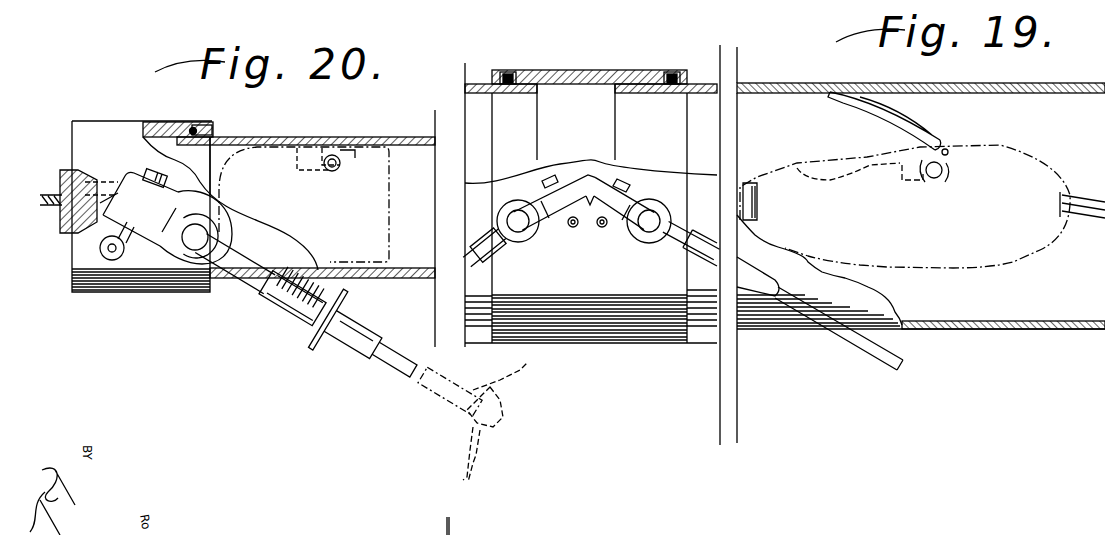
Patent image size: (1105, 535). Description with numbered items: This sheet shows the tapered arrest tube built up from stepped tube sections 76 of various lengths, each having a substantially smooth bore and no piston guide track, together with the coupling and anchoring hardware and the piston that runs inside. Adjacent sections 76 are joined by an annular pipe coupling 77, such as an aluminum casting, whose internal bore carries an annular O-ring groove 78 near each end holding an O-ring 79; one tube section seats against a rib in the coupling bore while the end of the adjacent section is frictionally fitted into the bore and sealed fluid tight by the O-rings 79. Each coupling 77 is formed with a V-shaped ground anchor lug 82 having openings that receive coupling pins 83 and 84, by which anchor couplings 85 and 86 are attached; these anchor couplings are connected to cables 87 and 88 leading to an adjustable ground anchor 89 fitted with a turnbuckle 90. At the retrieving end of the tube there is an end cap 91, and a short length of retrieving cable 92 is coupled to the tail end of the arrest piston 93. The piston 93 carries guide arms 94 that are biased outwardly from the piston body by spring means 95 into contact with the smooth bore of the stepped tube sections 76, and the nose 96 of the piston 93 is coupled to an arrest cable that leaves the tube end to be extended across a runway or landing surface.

In FIG. 20, the stepped tube section 76 is at (270, 141).
In FIG. 19, the annular pipe coupling 77 is at (605, 70).
In FIG. 20, the O-ring groove 78 is at (192, 129).
In FIG. 19, the O-ring groove 78 is at (514, 80).
In FIG. 20, the O-ring 79 is at (212, 124).
In FIG. 19, the O-ring 79 is at (507, 73).
In FIG. 19, the ground anchor lug 82 is at (597, 198).
In FIG. 19, the coupling pin 83 is at (566, 224).
In FIG. 19, the coupling pin 84 is at (608, 227).
In FIG. 19, the anchor coupling 85 is at (530, 198).
In FIG. 19, the anchor coupling 86 is at (658, 204).
In FIG. 19, the cable 87 is at (472, 248).
In FIG. 19, the cable 88 is at (827, 322).
In FIG. 20, the adjustable ground anchor 89 is at (437, 384).
In FIG. 20, the turnbuckle 90 is at (296, 305).
In FIG. 20, the end cap 91 is at (156, 292).
In FIG. 20, the retrieving cable 92 is at (60, 212).
In FIG. 20, the arrest piston 93 is at (370, 165).
In FIG. 19, the arrest piston 93 is at (1052, 184).
In FIG. 19, the guide arm 94 is at (928, 127).
In FIG. 19, the spring means 95 is at (938, 185).
In FIG. 19, the nose 96 is at (1060, 222).